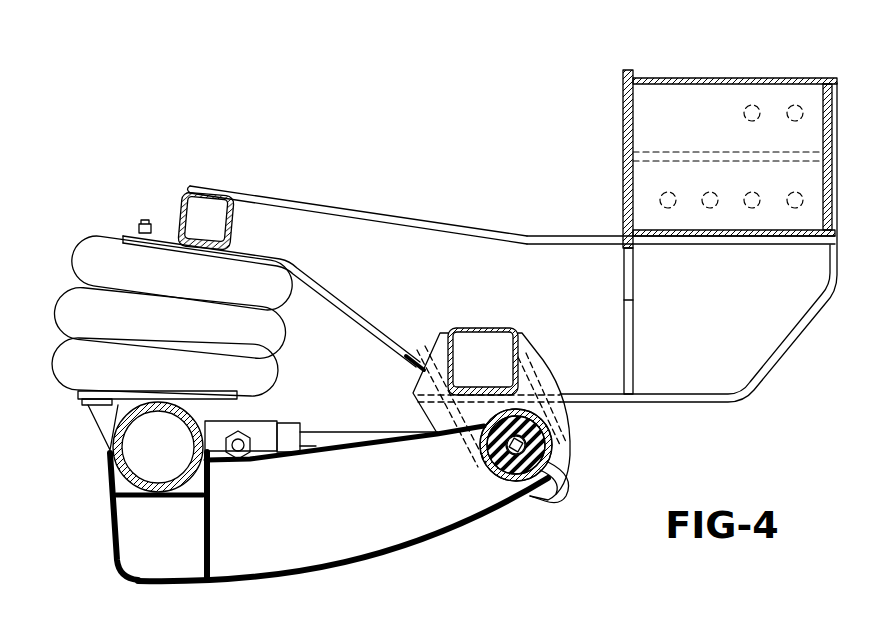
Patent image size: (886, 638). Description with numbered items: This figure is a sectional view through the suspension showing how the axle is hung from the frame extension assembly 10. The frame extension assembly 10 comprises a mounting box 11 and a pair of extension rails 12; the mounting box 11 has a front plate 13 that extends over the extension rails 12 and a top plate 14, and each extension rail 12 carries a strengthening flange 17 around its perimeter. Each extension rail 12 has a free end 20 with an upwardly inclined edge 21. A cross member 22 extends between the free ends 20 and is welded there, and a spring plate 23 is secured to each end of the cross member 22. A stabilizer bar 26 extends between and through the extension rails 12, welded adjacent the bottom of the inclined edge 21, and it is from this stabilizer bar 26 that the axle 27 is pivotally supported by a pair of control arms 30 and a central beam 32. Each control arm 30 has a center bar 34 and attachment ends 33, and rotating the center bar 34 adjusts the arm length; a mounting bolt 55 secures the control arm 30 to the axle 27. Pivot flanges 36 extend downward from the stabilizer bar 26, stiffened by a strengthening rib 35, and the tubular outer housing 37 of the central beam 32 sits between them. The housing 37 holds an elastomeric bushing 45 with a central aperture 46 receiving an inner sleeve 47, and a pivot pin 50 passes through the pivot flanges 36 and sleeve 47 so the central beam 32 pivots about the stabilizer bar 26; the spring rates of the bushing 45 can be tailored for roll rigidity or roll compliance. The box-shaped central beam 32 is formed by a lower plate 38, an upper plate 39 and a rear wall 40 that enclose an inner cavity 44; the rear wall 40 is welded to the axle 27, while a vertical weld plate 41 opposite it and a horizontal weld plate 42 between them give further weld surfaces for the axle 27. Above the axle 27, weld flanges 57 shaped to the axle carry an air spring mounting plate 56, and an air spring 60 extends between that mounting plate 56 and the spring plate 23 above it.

The frame extension assembly 10 is at (497, 220).
The mounting box 11 is at (762, 74).
The extension rail 12 is at (565, 266).
The front plate 13 is at (622, 120).
The top plate 14 is at (677, 78).
The strengthening flange 17 is at (778, 358).
The free end 20 is at (264, 236).
The upwardly inclined edge 21 is at (343, 301).
The cross member 22 is at (181, 210).
The spring plate 23 is at (143, 226).
The stabilizer bar 26 is at (482, 326).
The axle 27 is at (115, 400).
The control arm 30 is at (368, 436).
The central beam 32 is at (431, 536).
The attachment end 33 is at (293, 416).
The center bar 34 is at (332, 437).
The strengthening rib 35 is at (534, 380).
The pivot flange 36 is at (535, 495).
The tubular outer housing 37 is at (560, 469).
The lower plate 38 is at (375, 552).
The upper plate 39 is at (328, 457).
The rear wall 40 is at (112, 515).
The vertical weld plate 41 is at (212, 531).
The horizontal weld plate 42 is at (173, 498).
The inner cavity 44 is at (322, 532).
The elastomeric bushing 45 is at (544, 458).
The central aperture 46 is at (498, 472).
The inner sleeve 47 is at (521, 438).
The pivot pin 50 is at (522, 447).
The mounting bolt 55 is at (240, 452).
The air spring mounting plate 56 is at (81, 408).
The weld flange 57 is at (102, 429).
The air spring 60 is at (82, 252).